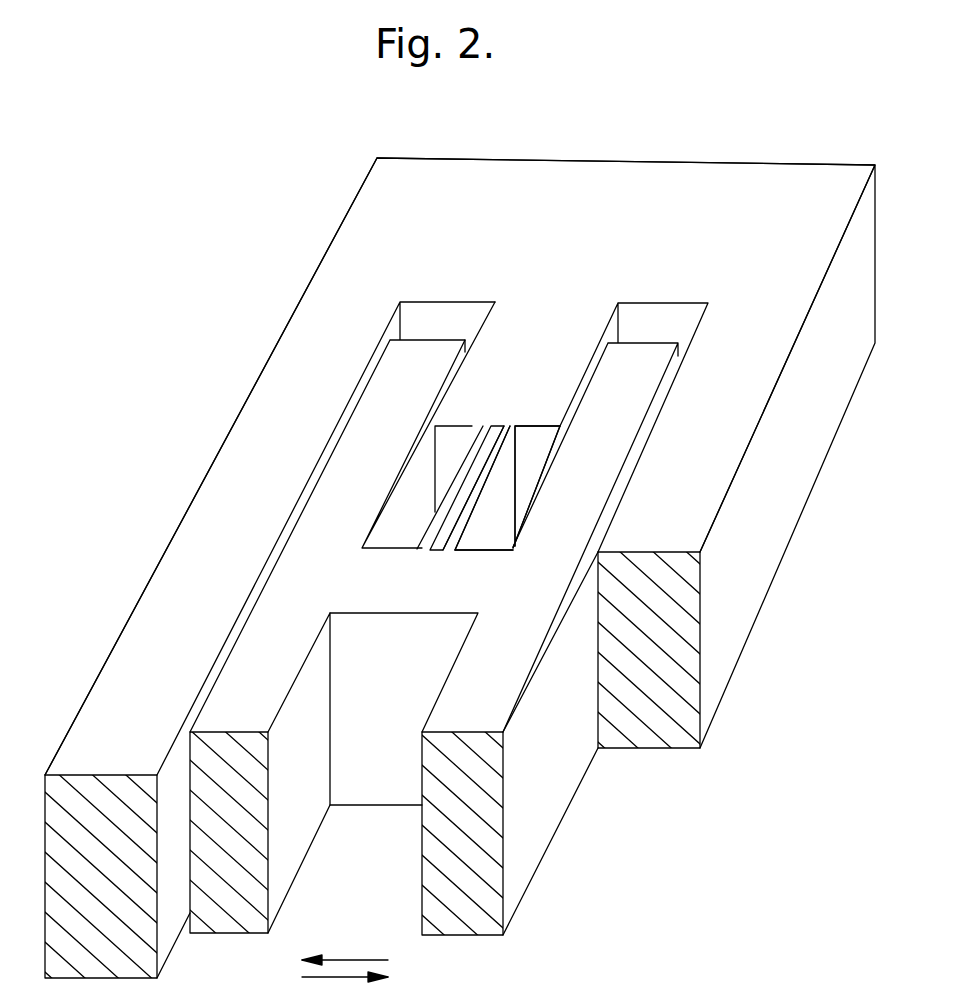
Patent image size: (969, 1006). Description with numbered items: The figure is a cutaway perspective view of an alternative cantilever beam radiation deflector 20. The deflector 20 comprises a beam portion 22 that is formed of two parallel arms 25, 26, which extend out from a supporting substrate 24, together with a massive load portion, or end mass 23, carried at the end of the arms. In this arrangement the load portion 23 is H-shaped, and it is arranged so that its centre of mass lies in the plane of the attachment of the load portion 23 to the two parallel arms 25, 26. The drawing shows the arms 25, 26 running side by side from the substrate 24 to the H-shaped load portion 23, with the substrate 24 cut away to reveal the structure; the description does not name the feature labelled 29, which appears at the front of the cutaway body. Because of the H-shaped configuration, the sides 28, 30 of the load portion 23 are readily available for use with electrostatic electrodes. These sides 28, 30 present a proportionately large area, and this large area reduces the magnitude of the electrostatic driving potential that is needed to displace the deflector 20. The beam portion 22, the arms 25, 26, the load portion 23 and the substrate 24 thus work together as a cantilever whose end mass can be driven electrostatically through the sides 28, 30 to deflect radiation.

The cantilever beam radiation deflector 20 is at (573, 889).
The beam portion 22 is at (490, 514).
The load portion 23 is at (440, 598).
The supporting substrate 24 is at (578, 311).
The parallel arm 25 is at (518, 447).
The parallel arm 26 is at (472, 452).
The side of the load portion 28 is at (178, 878).
The leg 29 is at (171, 902).
The side of the load portion 30 is at (540, 782).